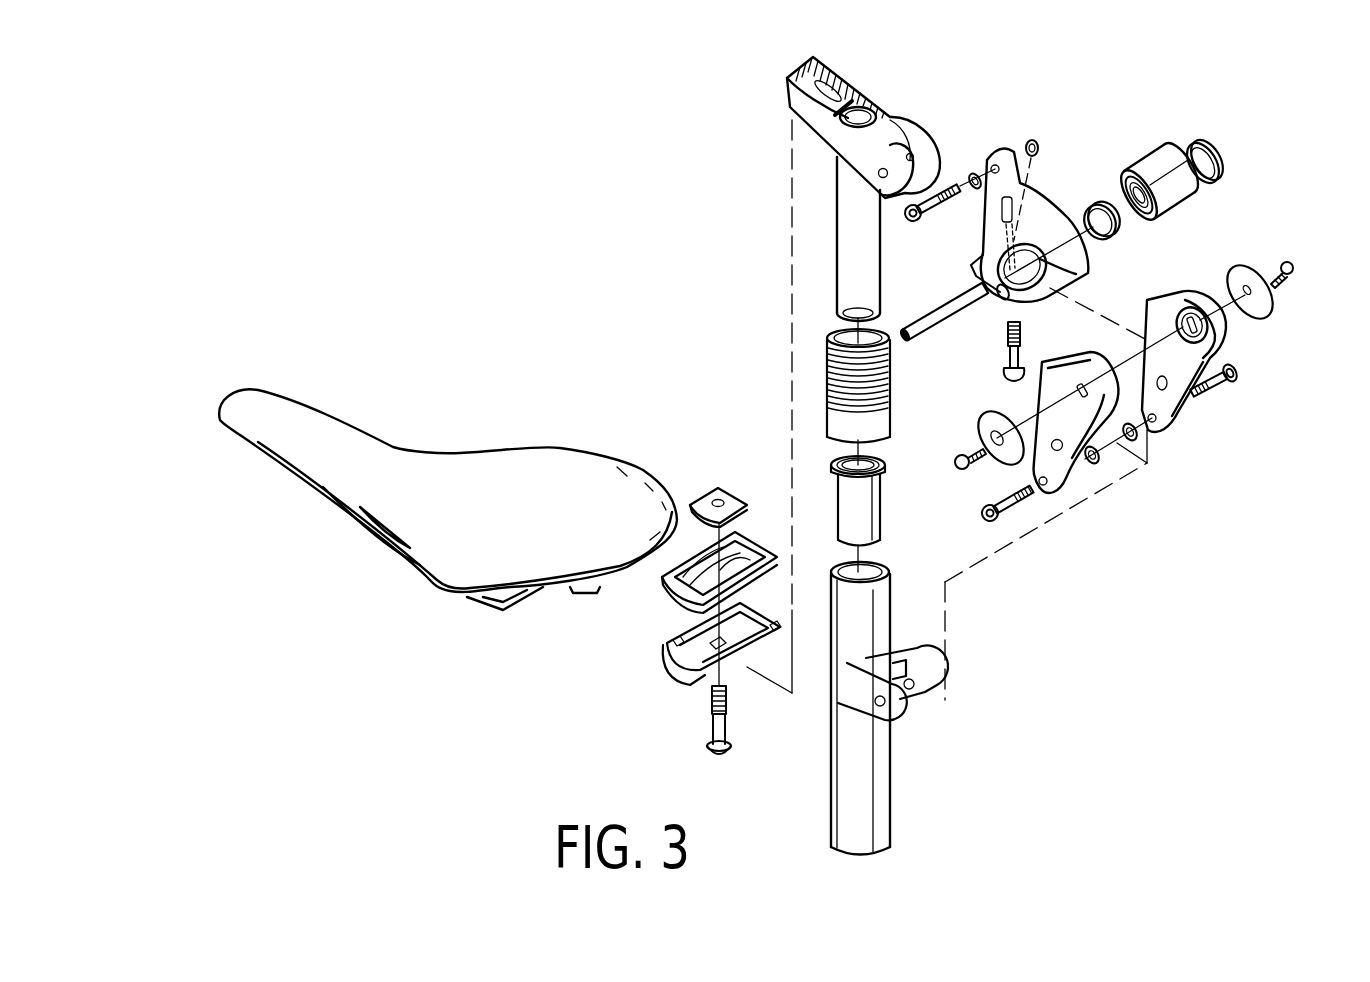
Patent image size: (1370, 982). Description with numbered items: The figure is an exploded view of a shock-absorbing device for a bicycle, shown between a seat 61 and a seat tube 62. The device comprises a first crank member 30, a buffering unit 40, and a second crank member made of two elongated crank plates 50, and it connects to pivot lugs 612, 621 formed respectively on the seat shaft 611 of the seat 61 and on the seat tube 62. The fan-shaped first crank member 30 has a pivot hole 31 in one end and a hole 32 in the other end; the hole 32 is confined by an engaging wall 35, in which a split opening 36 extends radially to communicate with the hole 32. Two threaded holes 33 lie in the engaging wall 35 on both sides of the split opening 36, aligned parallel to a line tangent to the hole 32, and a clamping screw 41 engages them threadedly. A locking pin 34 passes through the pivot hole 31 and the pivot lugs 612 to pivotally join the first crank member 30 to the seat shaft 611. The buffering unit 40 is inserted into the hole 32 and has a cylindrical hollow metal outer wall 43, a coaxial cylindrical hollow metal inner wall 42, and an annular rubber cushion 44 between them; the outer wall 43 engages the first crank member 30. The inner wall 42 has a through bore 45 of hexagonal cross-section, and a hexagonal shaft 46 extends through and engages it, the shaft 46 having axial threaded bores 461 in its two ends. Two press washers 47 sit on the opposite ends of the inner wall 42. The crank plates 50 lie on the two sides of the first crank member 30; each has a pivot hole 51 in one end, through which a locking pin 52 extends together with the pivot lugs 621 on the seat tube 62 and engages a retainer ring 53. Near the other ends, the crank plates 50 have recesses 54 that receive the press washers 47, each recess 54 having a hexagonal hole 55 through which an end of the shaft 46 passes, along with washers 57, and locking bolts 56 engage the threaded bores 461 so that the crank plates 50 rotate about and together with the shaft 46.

The first crank member 30 is at (1061, 134).
The pivot hole 31 is at (996, 154).
The hole 32 is at (1047, 228).
The threaded holes 33 is at (1031, 140).
The locking pin 34 is at (943, 207).
The engaging wall 35 is at (1062, 282).
The split opening 36 is at (982, 263).
The buffering unit 40 is at (1208, 191).
The clamping screw 41 is at (1003, 370).
The inner wall 42 is at (1152, 215).
The outer wall 43 is at (1178, 160).
The rubber cushion 44 is at (1158, 172).
The through bore 45 is at (1125, 190).
The shaft 46 is at (933, 317).
The threaded bores 461 is at (843, 313).
The press washers 47 is at (1102, 241).
The crank plates 50 is at (1207, 424).
The pivot hole 51 is at (1037, 482).
The locking pin 52 is at (990, 521).
The retainer ring 53 is at (1117, 463).
The recesses 54 is at (1232, 338).
The hexagonal hole 55 is at (1180, 303).
The locking bolts 56 is at (1290, 260).
The washers 57 is at (1248, 268).
The seat 61 is at (438, 478).
The seat shaft 611 is at (847, 223).
The pivot lugs 612 is at (926, 185).
The seat tube 62 is at (873, 801).
The pivot lugs 621 is at (937, 690).